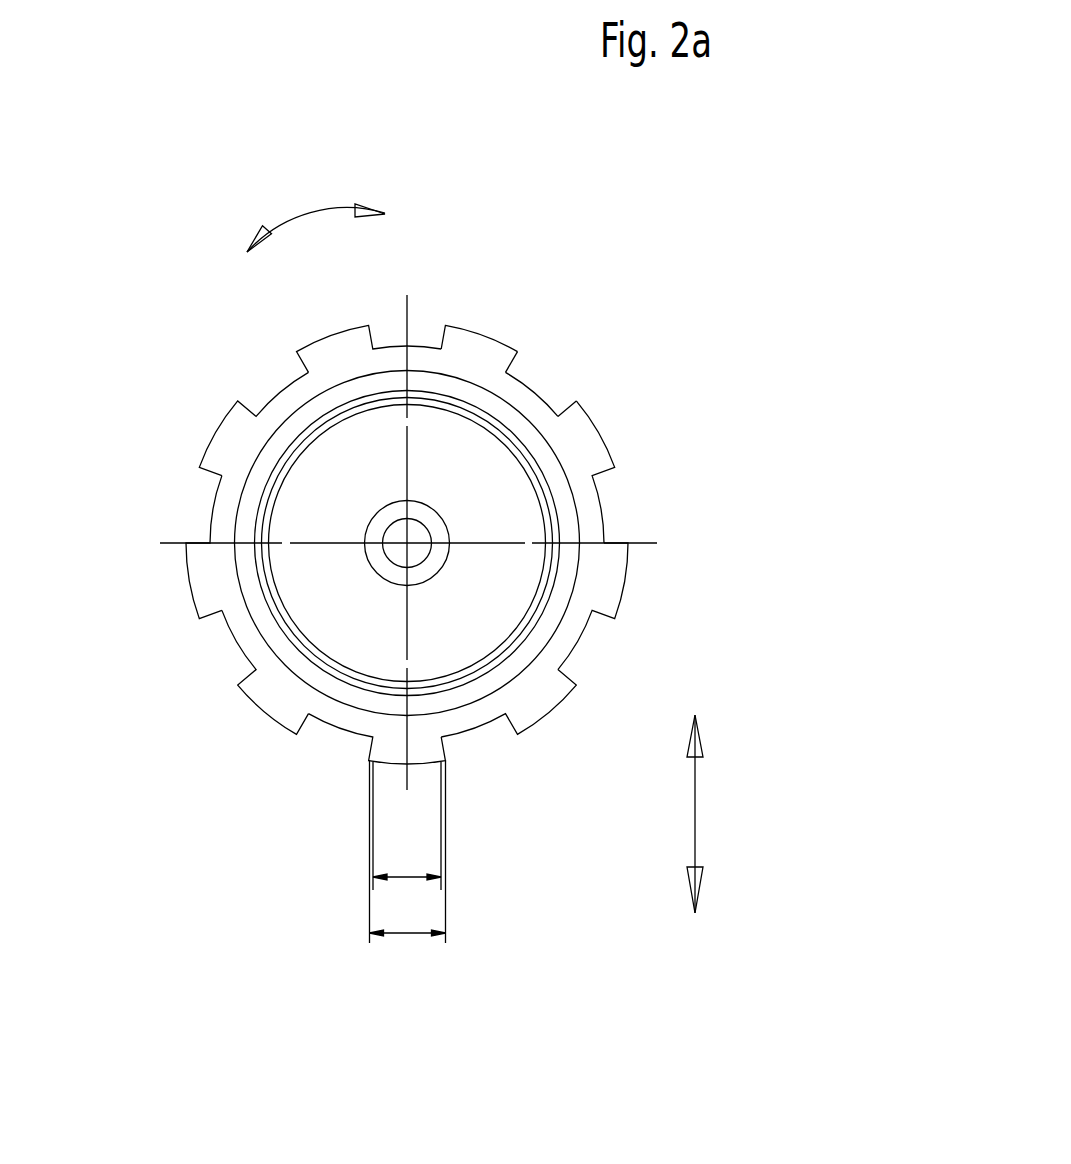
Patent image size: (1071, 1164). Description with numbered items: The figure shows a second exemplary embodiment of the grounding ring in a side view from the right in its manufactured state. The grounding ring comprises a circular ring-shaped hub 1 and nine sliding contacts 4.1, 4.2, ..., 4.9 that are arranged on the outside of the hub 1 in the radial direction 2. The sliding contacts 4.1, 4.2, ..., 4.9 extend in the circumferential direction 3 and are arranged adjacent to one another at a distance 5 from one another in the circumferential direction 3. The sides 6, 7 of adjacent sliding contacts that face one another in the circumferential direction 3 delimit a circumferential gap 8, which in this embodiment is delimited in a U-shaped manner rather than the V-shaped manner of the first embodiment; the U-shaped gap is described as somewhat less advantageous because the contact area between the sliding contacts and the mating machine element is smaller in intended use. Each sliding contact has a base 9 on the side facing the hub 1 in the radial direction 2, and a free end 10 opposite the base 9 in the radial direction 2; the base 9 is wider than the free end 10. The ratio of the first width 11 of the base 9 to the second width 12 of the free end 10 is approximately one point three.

The hub 1 is at (272, 588).
The radial direction 2 is at (695, 814).
The circumferential direction 3 is at (309, 213).
The sliding contact 4.1 is at (584, 303).
The sliding contact 4.2 is at (682, 445).
The sliding contact 4.9 is at (338, 353).
The distance 5 is at (642, 366).
The side 6 is at (513, 362).
The side 7 is at (568, 408).
The circumferential gap 8 is at (541, 381).
The base 9 is at (568, 453).
The free end 10 is at (629, 568).
The first width 11 is at (407, 877).
The second width 12 is at (407, 933).